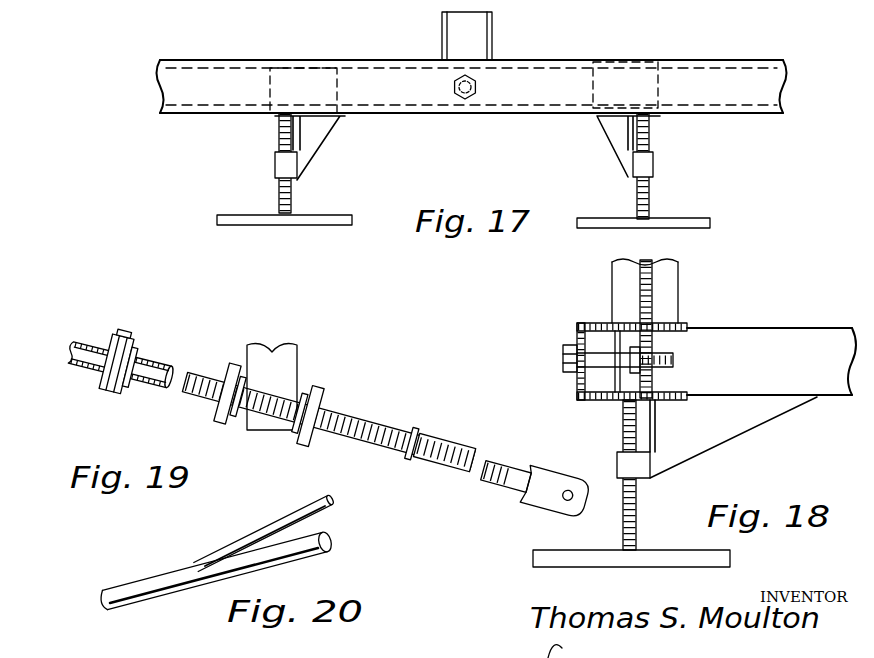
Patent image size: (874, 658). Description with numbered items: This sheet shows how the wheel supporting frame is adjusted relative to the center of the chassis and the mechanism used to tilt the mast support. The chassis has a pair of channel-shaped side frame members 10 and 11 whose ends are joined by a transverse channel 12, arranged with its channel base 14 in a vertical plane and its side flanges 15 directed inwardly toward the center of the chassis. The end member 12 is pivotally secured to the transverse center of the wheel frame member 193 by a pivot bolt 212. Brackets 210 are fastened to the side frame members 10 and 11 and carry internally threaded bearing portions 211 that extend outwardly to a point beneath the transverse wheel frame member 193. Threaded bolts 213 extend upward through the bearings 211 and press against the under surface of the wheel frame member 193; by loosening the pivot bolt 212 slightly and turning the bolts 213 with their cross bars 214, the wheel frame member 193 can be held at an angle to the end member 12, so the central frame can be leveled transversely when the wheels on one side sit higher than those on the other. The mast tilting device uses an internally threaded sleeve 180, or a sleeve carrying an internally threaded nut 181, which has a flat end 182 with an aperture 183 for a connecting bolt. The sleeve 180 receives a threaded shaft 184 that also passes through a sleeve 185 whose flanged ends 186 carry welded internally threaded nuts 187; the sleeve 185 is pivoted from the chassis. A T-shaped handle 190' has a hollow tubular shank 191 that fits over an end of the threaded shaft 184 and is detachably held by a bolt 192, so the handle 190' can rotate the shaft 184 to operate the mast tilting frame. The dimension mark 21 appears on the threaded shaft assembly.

In FIG. 17, the frame member 10 is at (340, 78).
In FIG. 17, the frame member 11 is at (600, 86).
In FIG. 18, the transverse channel 12 is at (665, 322).
In FIG. 18, the channel base 14 is at (652, 385).
In FIG. 18, the side flange 15 is at (672, 330).
In FIG. 20, the thread dimension 21 is at (291, 375).
In FIG. 20, the internally threaded sleeve 180 is at (452, 440).
In FIG. 20, the internally threaded nut 181 is at (415, 430).
In FIG. 20, the flat end 182 is at (545, 488).
In FIG. 20, the aperture 183 is at (565, 497).
In FIG. 20, the threaded shaft 184 is at (370, 455).
In FIG. 20, the sleeve 185 is at (292, 370).
In FIG. 20, the flanged end 186 is at (240, 370).
In FIG. 20, the internally threaded nut 187 is at (218, 415).
In FIG. 20, the T-shaped handle 190' is at (217, 579).
In FIG. 19, the hollow tubular shank 191 is at (88, 335).
In FIG. 20, the hollow tubular shank 191 is at (272, 530).
In FIG. 19, the bolt 192 is at (122, 385).
In FIG. 17, the transverse wheel frame member 193 is at (215, 75).
In FIG. 17, the bracket 210 is at (312, 150).
In FIG. 18, the bracket 210 is at (688, 455).
In FIG. 17, the internally threaded bearing portion 211 is at (275, 167).
In FIG. 18, the internally threaded bearing portion 211 is at (615, 462).
In FIG. 17, the pivot bolt 212 is at (462, 100).
In FIG. 17, the threaded bolt 213 is at (292, 196).
In FIG. 17, the cross bar 214 is at (308, 222).